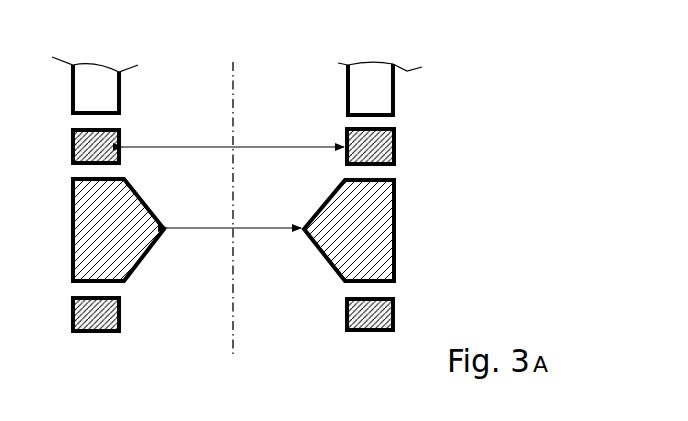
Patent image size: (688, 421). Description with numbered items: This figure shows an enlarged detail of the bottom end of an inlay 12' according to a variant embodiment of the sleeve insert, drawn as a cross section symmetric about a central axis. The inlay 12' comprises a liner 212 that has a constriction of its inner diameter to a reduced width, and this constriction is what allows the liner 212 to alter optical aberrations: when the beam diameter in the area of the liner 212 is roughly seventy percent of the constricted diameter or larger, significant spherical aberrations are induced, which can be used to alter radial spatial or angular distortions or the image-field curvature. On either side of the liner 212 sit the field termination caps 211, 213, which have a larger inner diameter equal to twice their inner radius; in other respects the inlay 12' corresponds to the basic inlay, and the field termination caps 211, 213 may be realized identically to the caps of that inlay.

The inlay 12' is at (281, 185).
The field termination cap 211 is at (380, 146).
The liner 212 is at (394, 214).
The field termination cap 213 is at (385, 308).